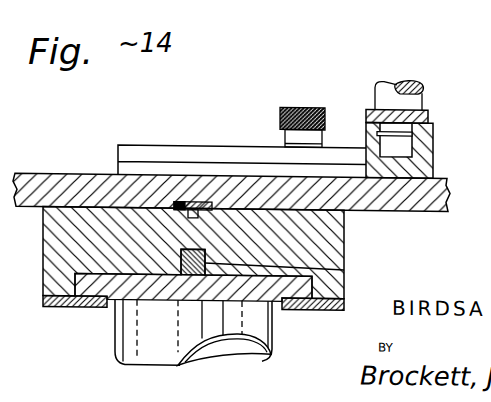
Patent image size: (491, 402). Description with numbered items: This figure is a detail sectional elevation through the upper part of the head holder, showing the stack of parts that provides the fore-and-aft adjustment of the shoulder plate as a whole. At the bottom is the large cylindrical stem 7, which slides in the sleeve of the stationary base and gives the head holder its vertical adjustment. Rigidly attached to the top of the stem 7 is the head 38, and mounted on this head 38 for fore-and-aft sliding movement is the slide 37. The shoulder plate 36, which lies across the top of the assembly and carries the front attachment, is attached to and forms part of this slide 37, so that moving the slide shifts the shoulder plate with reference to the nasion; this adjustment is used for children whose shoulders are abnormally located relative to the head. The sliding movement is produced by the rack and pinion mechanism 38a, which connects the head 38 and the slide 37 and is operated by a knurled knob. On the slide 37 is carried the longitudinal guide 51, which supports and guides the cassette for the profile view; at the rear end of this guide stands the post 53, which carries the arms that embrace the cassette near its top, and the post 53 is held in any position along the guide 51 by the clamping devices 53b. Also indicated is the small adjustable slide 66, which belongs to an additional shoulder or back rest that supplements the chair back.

The shoulder plate 36 is at (78, 186).
The adjustable slide 66 is at (190, 199).
The post 53 is at (407, 97).
The longitudinal guide 51 is at (427, 132).
The clamping devices 53b is at (414, 132).
The slide 37 is at (323, 248).
The rack and pinion mechanism 38a is at (327, 266).
The head 38 is at (102, 284).
The cylindrical stem 7 is at (258, 327).